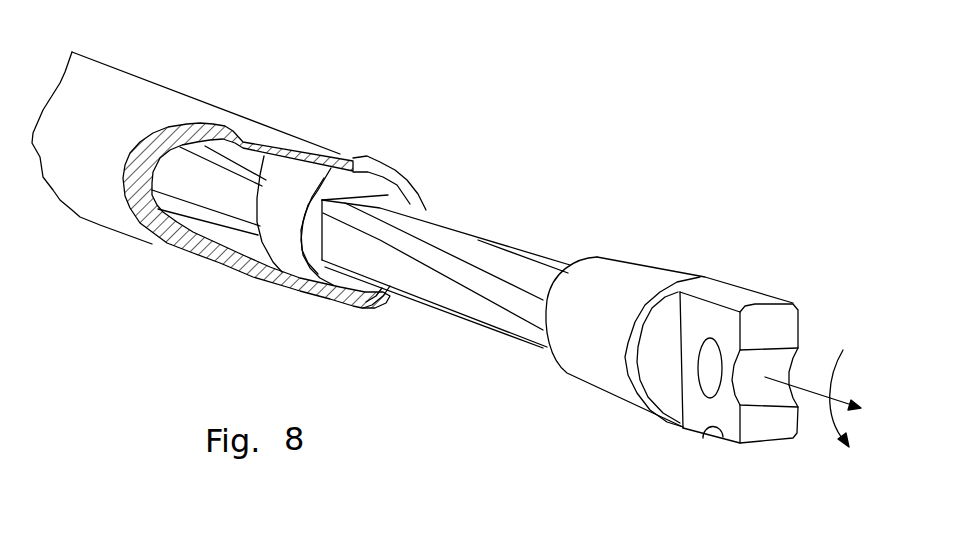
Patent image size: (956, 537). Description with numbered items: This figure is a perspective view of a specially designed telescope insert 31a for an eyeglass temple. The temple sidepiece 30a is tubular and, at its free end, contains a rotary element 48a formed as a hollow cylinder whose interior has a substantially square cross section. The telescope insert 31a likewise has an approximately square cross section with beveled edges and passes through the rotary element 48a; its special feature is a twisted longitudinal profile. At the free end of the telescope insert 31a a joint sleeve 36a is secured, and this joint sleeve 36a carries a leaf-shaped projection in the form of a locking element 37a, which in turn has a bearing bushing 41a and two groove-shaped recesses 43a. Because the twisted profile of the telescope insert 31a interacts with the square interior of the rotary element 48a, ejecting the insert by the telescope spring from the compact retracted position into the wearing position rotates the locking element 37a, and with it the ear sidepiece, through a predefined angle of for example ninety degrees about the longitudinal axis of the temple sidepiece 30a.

The temple sidepiece 30a is at (141, 110).
The rotary element 48a is at (310, 178).
The telescope insert 31a is at (457, 233).
The joint sleeve 36a is at (636, 288).
The locking element 37a is at (740, 300).
The bearing bushing 41a is at (710, 367).
The groove-shaped recesses 43a is at (753, 390).